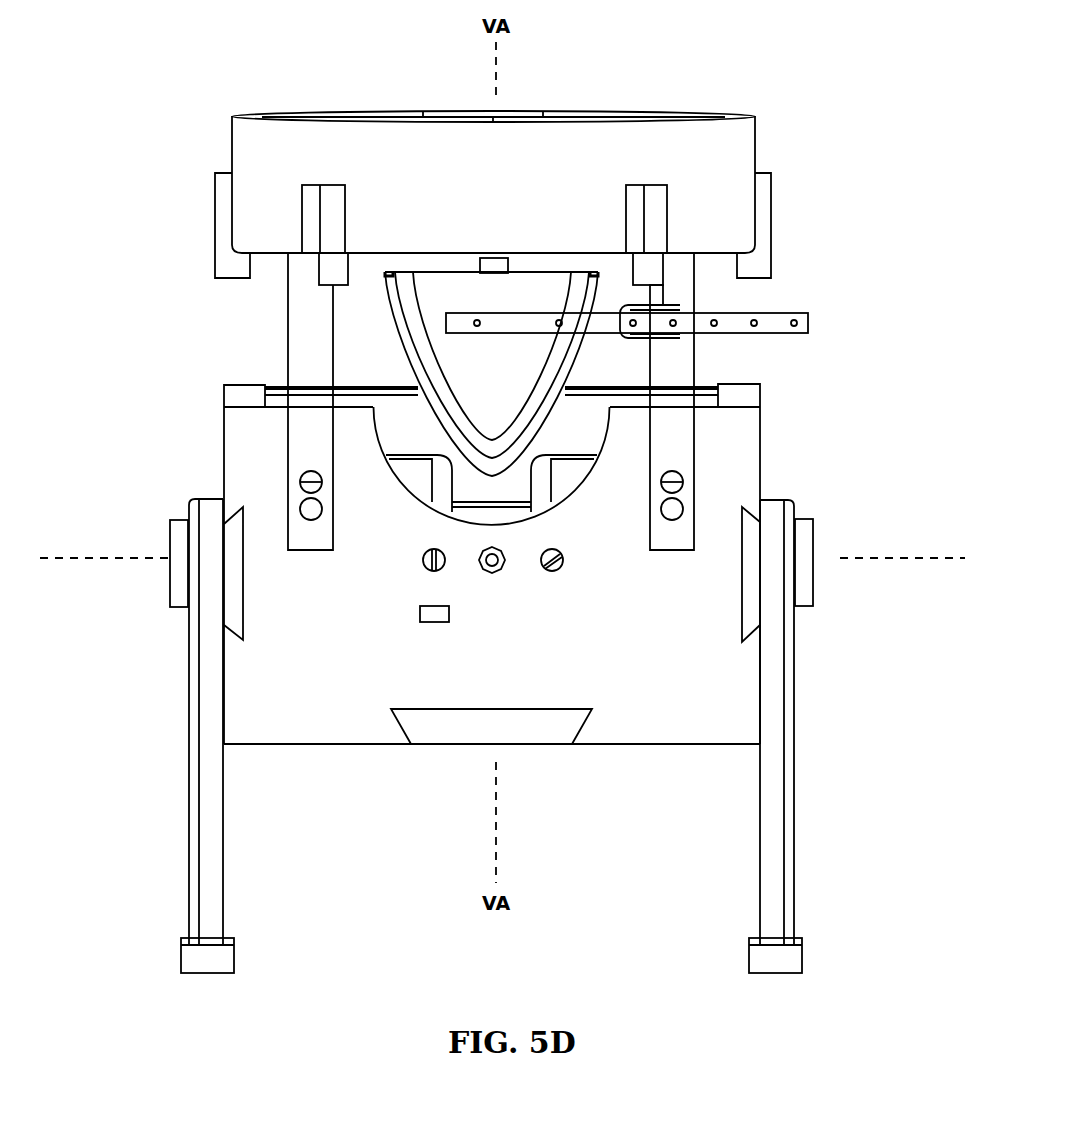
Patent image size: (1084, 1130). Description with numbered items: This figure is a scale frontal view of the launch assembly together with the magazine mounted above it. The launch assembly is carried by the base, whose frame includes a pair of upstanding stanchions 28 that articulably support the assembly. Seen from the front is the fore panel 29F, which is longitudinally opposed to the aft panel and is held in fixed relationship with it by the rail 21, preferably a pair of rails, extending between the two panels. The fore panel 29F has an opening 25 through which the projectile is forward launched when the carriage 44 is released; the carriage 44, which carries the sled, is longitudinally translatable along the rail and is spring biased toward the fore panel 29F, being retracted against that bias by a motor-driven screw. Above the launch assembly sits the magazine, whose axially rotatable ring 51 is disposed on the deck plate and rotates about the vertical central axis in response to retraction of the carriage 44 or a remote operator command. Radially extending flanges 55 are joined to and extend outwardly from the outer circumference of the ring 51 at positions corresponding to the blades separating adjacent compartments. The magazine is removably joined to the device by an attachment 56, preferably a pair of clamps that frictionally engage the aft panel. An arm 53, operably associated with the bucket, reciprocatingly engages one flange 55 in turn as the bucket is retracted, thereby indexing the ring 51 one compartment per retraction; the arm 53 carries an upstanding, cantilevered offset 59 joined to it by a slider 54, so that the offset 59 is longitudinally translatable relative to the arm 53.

The ring 51 is at (738, 143).
The flange 55 is at (222, 206).
The attachment 56 is at (303, 337).
The offset 59 is at (653, 297).
The slider 54 is at (652, 313).
The arm 53 is at (777, 322).
The carriage 44 is at (443, 287).
The fore panel 29F is at (740, 453).
The opening 25 is at (417, 432).
The rail 21 is at (470, 728).
The upstanding stanchion 28 is at (212, 809).